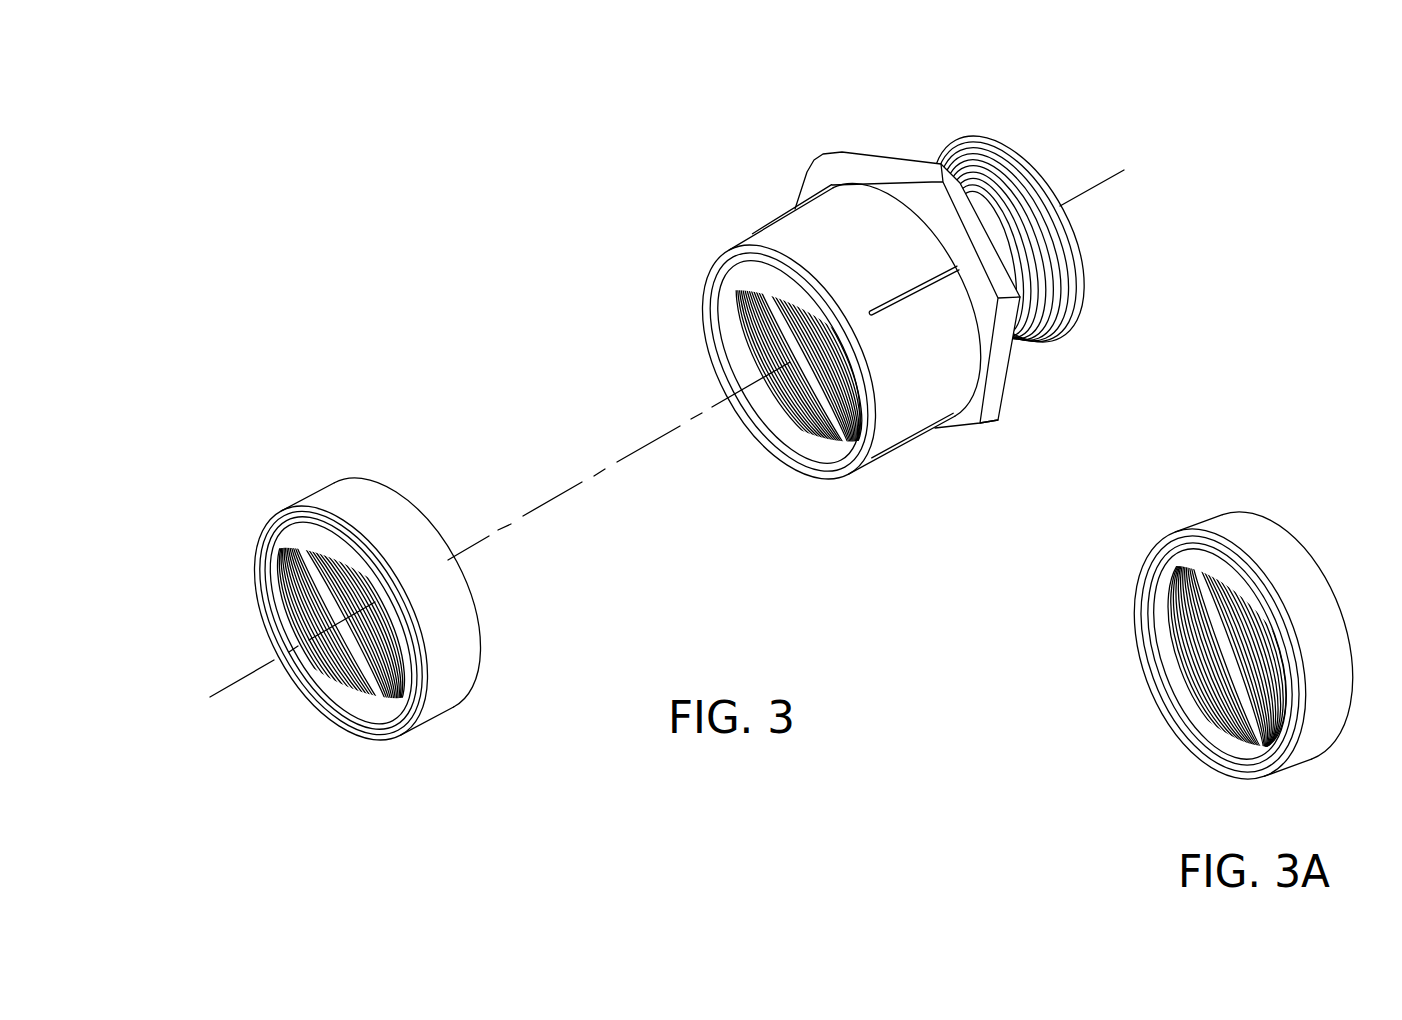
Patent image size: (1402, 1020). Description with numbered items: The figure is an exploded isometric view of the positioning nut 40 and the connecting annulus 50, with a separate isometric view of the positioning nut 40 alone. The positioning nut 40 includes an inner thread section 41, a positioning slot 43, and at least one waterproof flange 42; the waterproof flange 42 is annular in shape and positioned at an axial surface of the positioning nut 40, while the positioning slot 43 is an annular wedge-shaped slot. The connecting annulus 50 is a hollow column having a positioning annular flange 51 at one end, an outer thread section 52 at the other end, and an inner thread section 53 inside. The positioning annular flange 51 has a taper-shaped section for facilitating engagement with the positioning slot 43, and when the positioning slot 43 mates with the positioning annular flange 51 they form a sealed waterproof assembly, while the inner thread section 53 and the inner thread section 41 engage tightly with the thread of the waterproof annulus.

In FIG. 3, the positioning nut 40 is at (330, 392).
In FIG. 3A, the positioning nut 40 is at (1303, 482).
In FIG. 3, the inner thread section 41 is at (298, 607).
In FIG. 3A, the inner thread section 41 is at (1222, 713).
In FIG. 3, the waterproof flange 42 is at (262, 533).
In FIG. 3A, the positioning slot 43 is at (1185, 550).
In FIG. 3, the connecting annulus 50 is at (740, 126).
In FIG. 3, the positioning annular flange 51 is at (718, 303).
In FIG. 3, the outer thread section 52 is at (1016, 150).
In FIG. 3, the inner thread section 53 is at (772, 296).